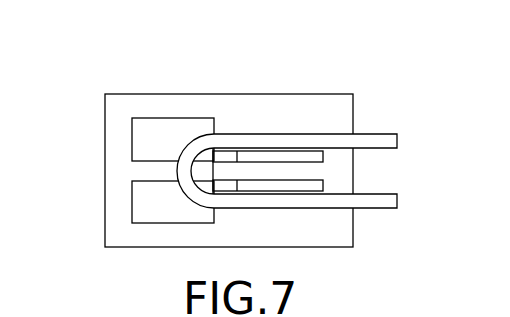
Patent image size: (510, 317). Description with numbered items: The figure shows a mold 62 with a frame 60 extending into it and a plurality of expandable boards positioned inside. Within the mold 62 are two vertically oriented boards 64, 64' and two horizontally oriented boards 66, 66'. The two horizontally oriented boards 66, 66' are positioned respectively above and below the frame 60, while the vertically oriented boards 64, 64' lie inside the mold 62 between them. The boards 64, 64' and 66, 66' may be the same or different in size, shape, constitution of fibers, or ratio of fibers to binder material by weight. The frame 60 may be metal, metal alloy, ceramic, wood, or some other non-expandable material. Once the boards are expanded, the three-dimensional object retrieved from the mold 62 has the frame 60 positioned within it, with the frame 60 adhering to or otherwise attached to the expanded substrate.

The frame 60 is at (388, 139).
The mold 62 is at (292, 93).
The vertically oriented board 64 is at (313, 166).
The vertically oriented board 64' is at (339, 186).
The horizontally oriented board 66 is at (173, 108).
The horizontally oriented board 66' is at (126, 196).